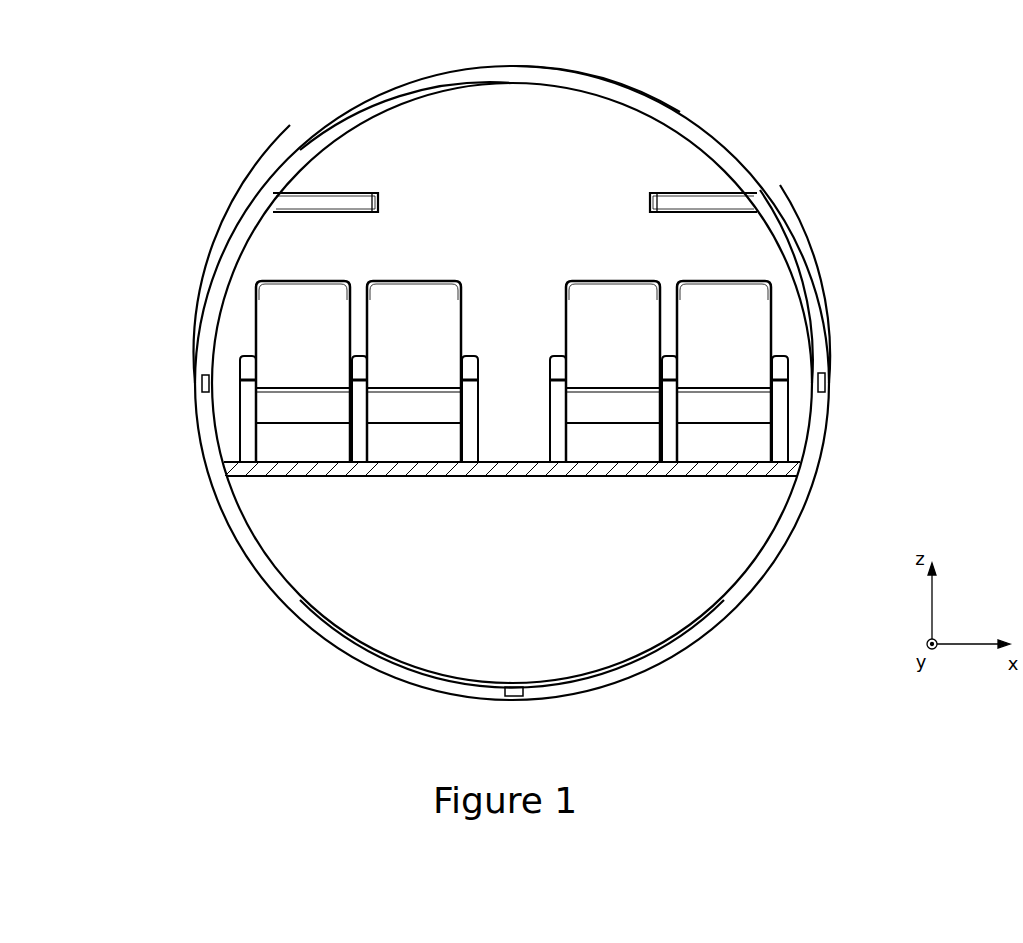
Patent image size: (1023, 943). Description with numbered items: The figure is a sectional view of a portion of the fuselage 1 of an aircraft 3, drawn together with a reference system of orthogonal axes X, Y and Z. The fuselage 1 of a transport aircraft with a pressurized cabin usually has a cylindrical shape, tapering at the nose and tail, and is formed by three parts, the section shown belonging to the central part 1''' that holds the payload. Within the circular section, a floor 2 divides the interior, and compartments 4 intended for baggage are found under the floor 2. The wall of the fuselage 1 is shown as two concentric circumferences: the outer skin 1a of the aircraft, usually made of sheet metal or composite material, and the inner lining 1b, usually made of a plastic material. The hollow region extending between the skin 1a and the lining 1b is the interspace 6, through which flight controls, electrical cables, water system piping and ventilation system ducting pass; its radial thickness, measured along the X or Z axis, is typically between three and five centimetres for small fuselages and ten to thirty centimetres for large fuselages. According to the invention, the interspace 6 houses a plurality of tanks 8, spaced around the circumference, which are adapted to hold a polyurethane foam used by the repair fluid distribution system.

The fuselage 1 is at (512, 383).
The outer skin 1a is at (230, 235).
The inner lining 1b is at (412, 110).
The central part 1''' is at (596, 64).
The floor 2 is at (672, 478).
The aircraft 3 is at (187, 115).
The compartments 4 is at (434, 567).
The interspace 6 is at (809, 298).
The tanks 8 is at (201, 382).